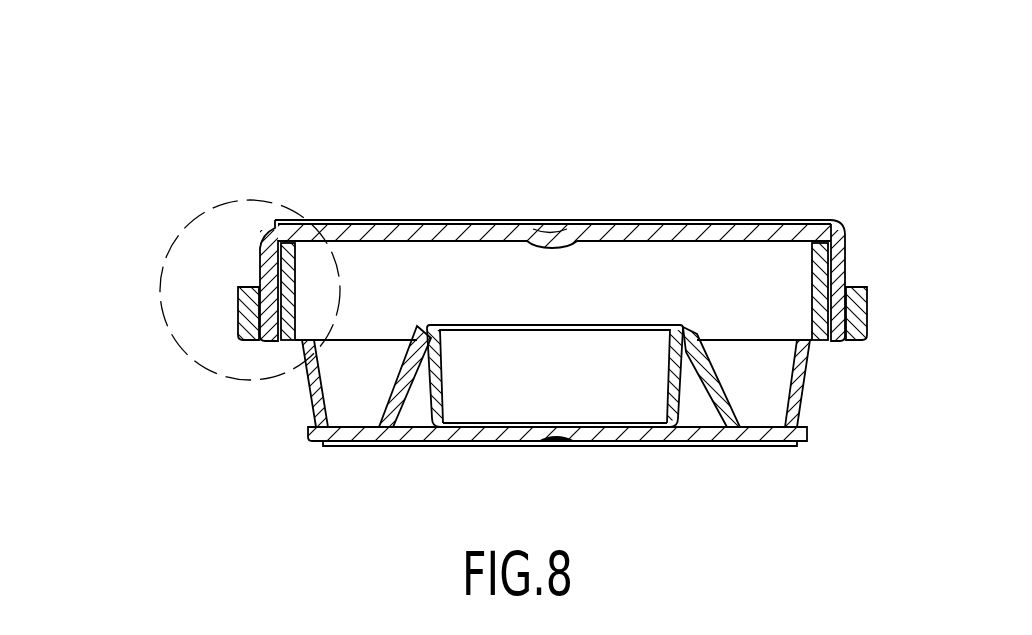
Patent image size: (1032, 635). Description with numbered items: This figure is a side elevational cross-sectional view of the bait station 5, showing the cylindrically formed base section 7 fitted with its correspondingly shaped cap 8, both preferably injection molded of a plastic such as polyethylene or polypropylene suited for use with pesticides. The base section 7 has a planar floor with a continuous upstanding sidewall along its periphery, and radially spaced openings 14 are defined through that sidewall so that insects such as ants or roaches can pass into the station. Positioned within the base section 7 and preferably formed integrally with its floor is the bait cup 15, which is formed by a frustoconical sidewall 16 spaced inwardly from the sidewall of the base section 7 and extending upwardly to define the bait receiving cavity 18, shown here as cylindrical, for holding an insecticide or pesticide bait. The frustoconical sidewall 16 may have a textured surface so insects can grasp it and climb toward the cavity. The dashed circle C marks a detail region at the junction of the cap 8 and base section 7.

The bait station 5 is at (586, 181).
The base section 7 is at (732, 462).
The cap 8 is at (841, 203).
The openings 14 is at (340, 367).
The bait cup 15 is at (500, 308).
The frustoconical sidewall 16 is at (720, 372).
The bait receiving cavity 18 is at (576, 390).
The detail circle C is at (177, 342).